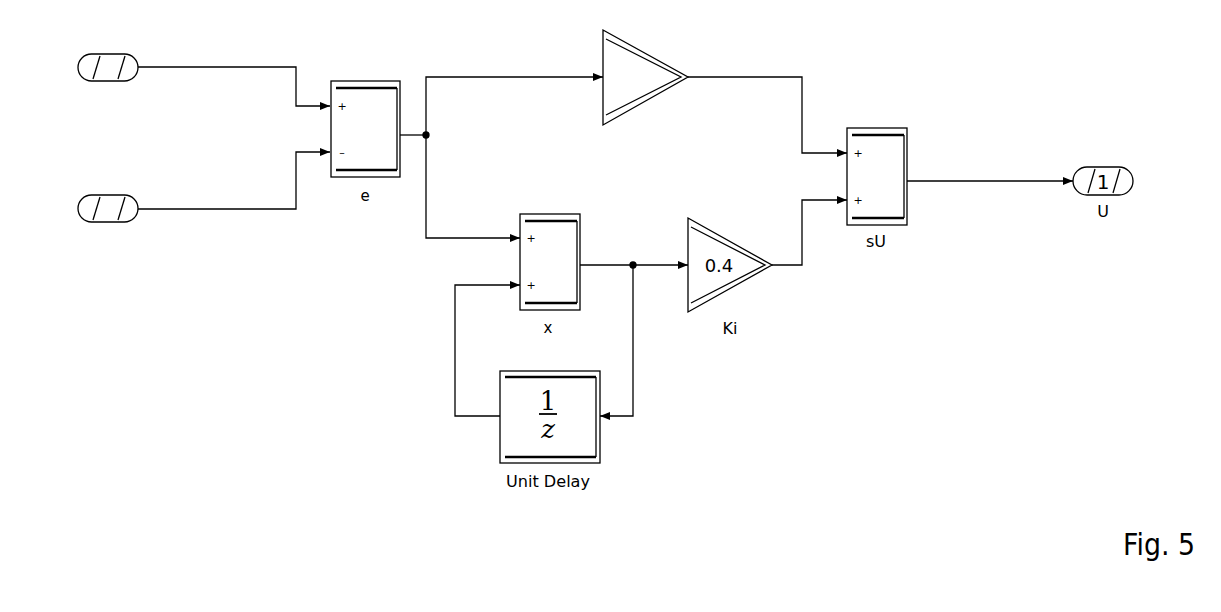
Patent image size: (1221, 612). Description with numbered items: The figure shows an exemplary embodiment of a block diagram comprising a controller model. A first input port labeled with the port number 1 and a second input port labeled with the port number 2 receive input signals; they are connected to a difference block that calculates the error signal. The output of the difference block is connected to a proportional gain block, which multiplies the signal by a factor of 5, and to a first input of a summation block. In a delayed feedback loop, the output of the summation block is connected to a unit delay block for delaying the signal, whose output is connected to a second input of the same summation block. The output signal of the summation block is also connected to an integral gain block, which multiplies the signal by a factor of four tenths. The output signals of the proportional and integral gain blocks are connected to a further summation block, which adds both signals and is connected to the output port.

The input port 1 (REF) 1 is at (204, 82).
The input port 2 (Y) 2 is at (204, 199).
The proportional gain Kp 5 is at (645, 92).